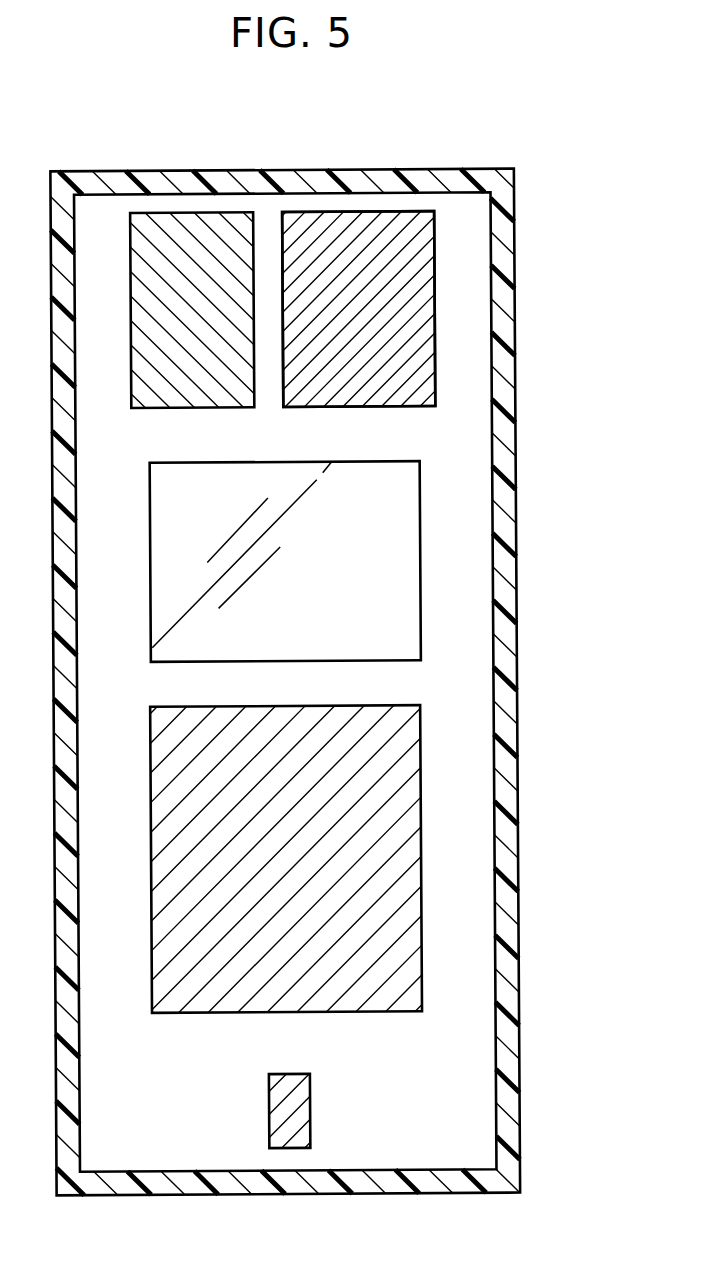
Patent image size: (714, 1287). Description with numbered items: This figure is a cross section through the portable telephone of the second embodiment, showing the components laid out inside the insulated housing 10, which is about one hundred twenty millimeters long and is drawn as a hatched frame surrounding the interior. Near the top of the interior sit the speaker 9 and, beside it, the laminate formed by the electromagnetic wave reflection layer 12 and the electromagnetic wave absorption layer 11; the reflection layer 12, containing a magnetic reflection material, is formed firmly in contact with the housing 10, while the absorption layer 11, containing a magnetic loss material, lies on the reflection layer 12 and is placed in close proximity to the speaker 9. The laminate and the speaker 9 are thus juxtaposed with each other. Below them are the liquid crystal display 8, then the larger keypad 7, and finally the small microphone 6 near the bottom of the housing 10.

The insulated housing 10 is at (510, 266).
The speaker 9 is at (228, 223).
The electromagnetic wave reflection layer 12 is at (375, 228).
The electromagnetic wave absorption layer 11 is at (358, 309).
The liquid crystal display 8 is at (406, 529).
The keypad 7 is at (406, 871).
The microphone 6 is at (294, 1128).